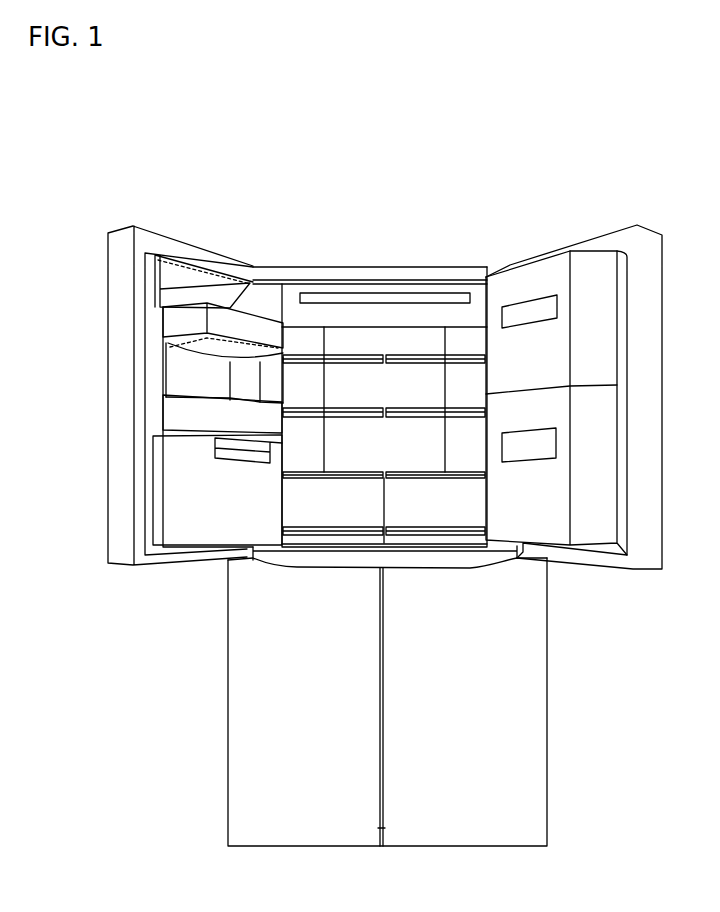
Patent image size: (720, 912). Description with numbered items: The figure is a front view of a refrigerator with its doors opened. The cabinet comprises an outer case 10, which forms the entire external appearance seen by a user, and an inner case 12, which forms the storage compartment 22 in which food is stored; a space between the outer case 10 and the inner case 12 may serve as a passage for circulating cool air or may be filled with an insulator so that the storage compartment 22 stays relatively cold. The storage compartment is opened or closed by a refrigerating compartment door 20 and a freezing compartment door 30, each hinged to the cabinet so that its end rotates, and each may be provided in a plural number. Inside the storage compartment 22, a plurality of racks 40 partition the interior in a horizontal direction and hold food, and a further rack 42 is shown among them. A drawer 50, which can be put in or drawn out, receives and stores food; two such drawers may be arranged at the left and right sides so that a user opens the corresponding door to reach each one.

The outer case 10 is at (273, 267).
The inner case 12 is at (432, 283).
The refrigerating compartment door 20 is at (118, 238).
The storage compartment 22 is at (343, 330).
The freezing compartment door 30 is at (522, 680).
The racks 40 is at (297, 473).
The shelf 42 is at (432, 346).
The drawer 50 is at (298, 507).